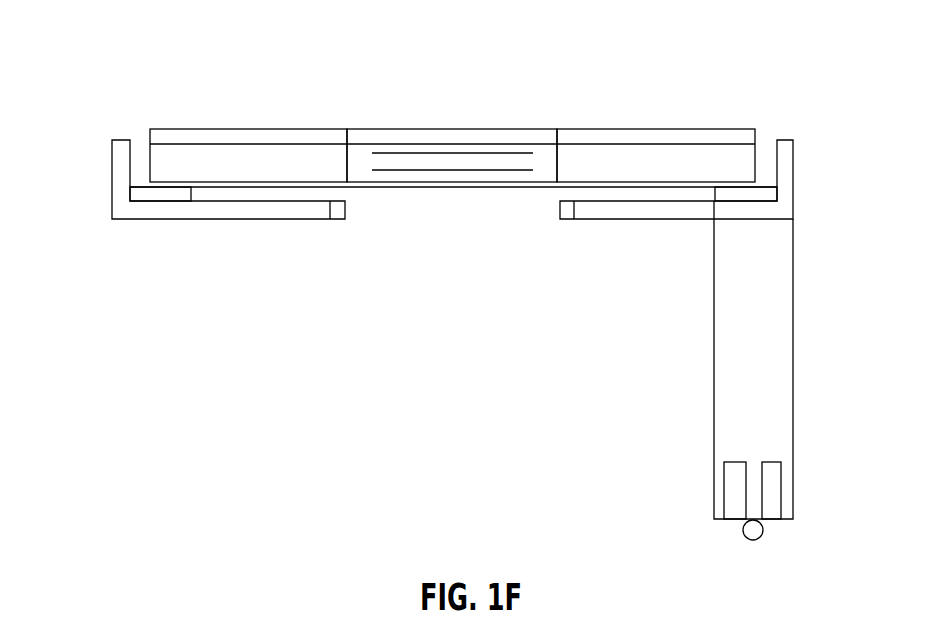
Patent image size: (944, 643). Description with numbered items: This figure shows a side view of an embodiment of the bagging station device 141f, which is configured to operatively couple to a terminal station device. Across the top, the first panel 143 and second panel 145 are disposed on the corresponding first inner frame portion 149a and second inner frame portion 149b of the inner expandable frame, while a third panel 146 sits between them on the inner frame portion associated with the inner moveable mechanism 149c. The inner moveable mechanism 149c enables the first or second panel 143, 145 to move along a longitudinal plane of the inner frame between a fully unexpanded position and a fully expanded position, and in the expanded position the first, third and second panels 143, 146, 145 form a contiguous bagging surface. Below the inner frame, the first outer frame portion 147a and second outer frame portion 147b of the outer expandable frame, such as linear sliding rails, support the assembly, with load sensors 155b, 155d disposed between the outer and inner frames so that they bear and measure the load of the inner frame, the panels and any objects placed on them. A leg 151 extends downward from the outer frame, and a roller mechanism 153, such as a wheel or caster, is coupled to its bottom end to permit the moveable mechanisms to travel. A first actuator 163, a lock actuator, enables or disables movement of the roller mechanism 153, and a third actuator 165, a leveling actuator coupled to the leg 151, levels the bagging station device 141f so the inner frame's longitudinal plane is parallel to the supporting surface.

The bagging station device 141f is at (126, 77).
The first panel 143 is at (237, 129).
The first inner frame portion 149a is at (272, 155).
The third panel 146 is at (417, 129).
The inner moveable mechanism 149c is at (475, 153).
The second panel 145 is at (603, 129).
The second inner frame portion 149b is at (682, 157).
The load sensor 155b is at (157, 195).
The first outer frame portion 147a is at (270, 210).
The load sensor 155d is at (767, 195).
The second outer frame portion 147b is at (657, 210).
The leg 151 is at (713, 338).
The first actuator 163 is at (723, 492).
The third actuator 165 is at (773, 493).
The roller mechanism 153 is at (763, 542).